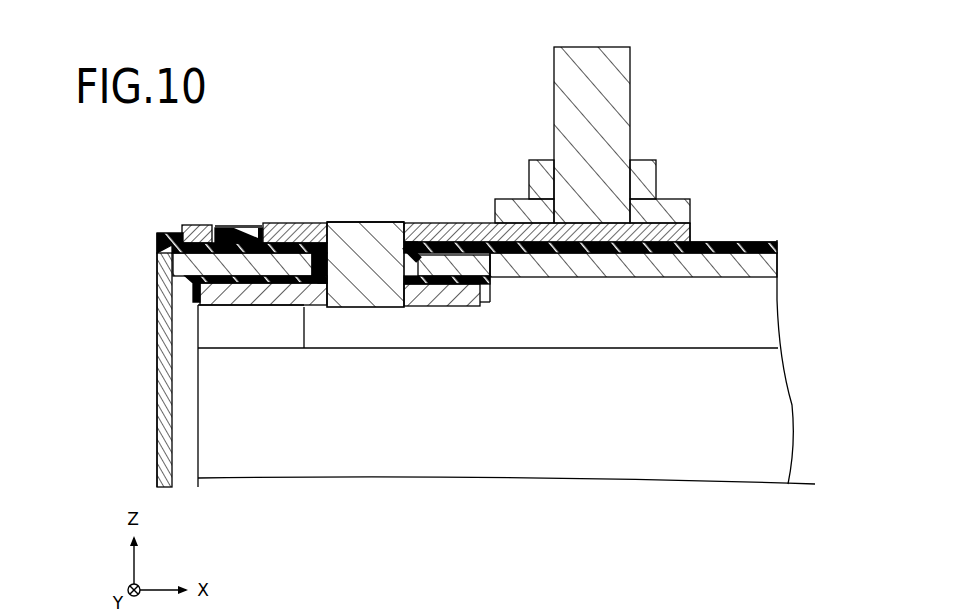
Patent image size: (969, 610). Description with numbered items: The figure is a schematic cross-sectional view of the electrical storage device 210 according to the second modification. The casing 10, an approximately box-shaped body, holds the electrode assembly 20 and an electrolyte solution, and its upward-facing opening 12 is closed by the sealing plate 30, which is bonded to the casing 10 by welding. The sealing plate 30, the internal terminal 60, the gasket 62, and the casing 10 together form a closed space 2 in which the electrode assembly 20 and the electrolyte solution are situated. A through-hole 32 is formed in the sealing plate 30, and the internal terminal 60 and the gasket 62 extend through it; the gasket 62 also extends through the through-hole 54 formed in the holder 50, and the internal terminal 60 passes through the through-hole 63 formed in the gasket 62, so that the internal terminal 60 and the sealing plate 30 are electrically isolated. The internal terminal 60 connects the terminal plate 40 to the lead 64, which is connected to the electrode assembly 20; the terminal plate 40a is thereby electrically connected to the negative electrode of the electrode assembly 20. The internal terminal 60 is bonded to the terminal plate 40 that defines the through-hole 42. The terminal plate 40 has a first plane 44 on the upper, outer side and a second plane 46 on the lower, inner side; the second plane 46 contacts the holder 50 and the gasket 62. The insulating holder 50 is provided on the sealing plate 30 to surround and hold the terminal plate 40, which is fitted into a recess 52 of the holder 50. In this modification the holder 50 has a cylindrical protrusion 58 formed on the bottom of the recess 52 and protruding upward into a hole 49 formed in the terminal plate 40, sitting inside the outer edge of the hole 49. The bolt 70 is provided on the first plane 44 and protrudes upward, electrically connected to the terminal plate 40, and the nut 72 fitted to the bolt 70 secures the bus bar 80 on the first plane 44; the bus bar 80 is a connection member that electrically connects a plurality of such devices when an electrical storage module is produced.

The electrical storage device 210 is at (776, 49).
The closed space 2 is at (593, 321).
The casing 10 is at (162, 371).
The opening 12 is at (178, 268).
The electrode assembly 20 is at (215, 418).
The sealing plate 30 is at (763, 260).
The through-hole 32 is at (413, 250).
The terminal plate 40 is at (590, 247).
The terminal plate 40a is at (485, 232).
The through-hole 42 is at (392, 232).
The first plane 44 is at (291, 224).
The second plane 46 is at (166, 245).
The hole 49 is at (225, 226).
The holder 50 is at (716, 240).
The recess 52 is at (195, 225).
The through-hole 54 is at (295, 224).
The protrusion 58 is at (236, 226).
The internal terminal 60 is at (373, 256).
The gasket 62 is at (210, 285).
The through-hole 63 is at (345, 236).
The lead 64 is at (193, 303).
The bolt 70 is at (612, 128).
The nut 72 is at (540, 171).
The bus bar 80 is at (680, 208).